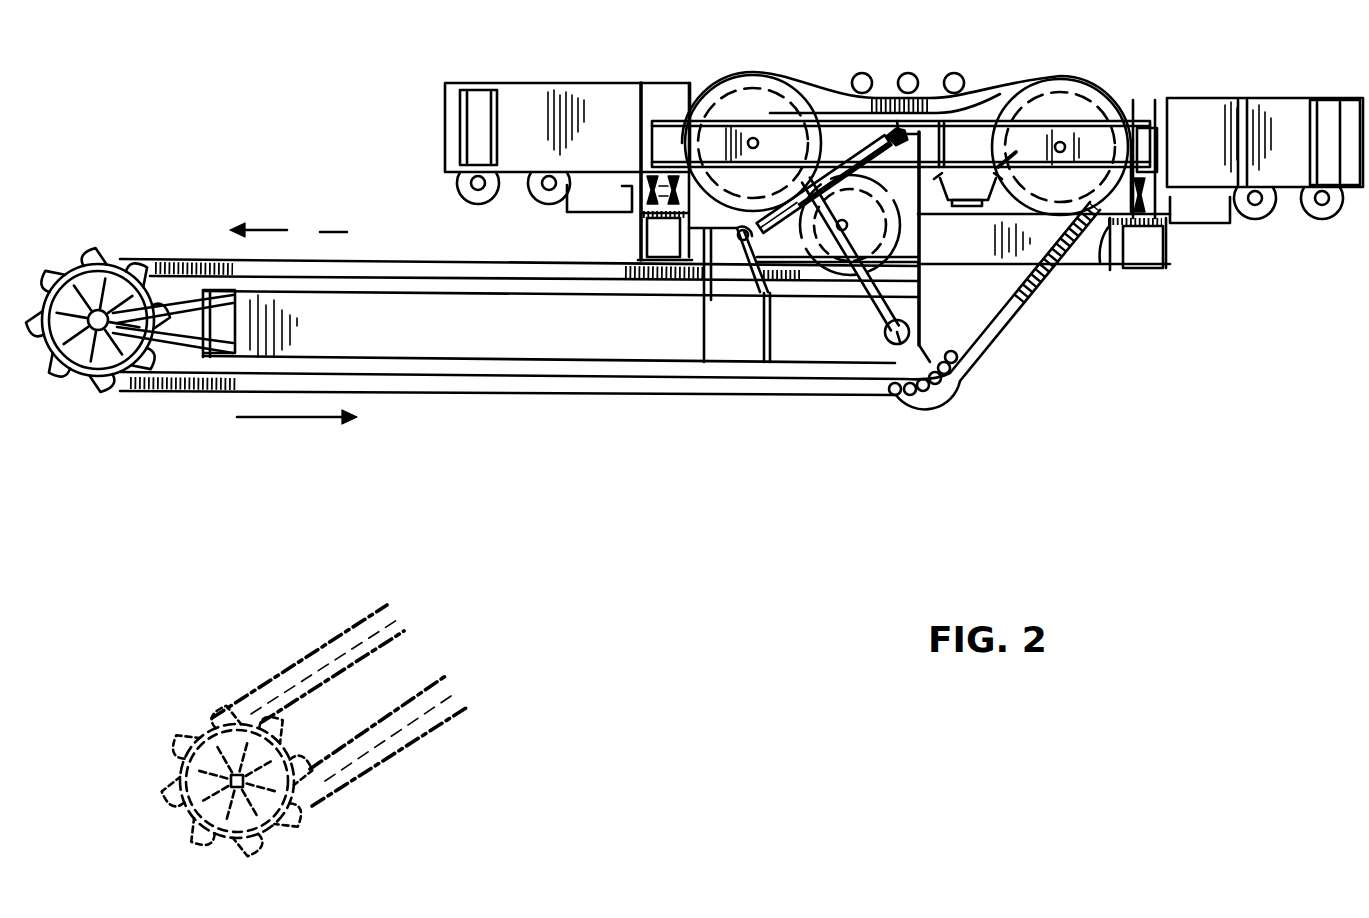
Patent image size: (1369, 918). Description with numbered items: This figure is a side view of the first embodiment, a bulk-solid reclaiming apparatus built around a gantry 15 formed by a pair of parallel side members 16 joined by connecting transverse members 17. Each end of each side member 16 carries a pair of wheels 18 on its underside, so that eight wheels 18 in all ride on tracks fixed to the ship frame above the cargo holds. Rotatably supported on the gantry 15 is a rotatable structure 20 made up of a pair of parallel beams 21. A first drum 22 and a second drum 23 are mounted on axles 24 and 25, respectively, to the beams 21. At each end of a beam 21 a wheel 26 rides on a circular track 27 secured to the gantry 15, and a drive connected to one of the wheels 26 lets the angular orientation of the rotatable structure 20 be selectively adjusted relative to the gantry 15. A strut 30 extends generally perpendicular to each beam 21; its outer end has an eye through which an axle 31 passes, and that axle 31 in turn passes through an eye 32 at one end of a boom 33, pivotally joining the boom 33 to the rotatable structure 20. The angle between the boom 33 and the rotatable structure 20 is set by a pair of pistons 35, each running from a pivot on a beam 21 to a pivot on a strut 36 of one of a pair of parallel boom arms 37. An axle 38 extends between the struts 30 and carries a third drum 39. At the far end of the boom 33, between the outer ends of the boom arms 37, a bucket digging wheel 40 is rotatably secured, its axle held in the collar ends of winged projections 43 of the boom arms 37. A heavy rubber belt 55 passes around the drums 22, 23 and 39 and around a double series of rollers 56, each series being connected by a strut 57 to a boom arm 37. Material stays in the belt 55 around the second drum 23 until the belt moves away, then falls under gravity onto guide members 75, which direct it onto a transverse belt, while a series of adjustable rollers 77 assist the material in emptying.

The gantry 15 is at (583, 70).
The side member 16 is at (1198, 113).
The transverse member 17 is at (487, 100).
The wheel 18 is at (478, 207).
The rotatable structure 20 is at (664, 110).
The beam 21 is at (1134, 98).
The first drum 22 is at (723, 84).
The second drum 23 is at (1043, 90).
The axle 24 is at (754, 136).
The axle 25 is at (1066, 138).
The wheel 26 is at (1148, 126).
The circular track 27 is at (1104, 222).
The strut 30 is at (900, 296).
The axle 31 is at (880, 378).
The eye 32 is at (862, 373).
The boom 33 is at (509, 413).
The piston 35 is at (884, 125).
The strut 36 is at (733, 285).
The boom arm 37 is at (613, 337).
The axle 38 is at (878, 254).
The third drum 39 is at (825, 258).
The bucket digging wheel 40 is at (80, 226).
The winged projection 43 is at (207, 290).
The belt 55 is at (418, 400).
The roller 56 is at (914, 400).
The strut 57 is at (965, 355).
The guide member 75 is at (942, 176).
The roller 77 is at (853, 76).